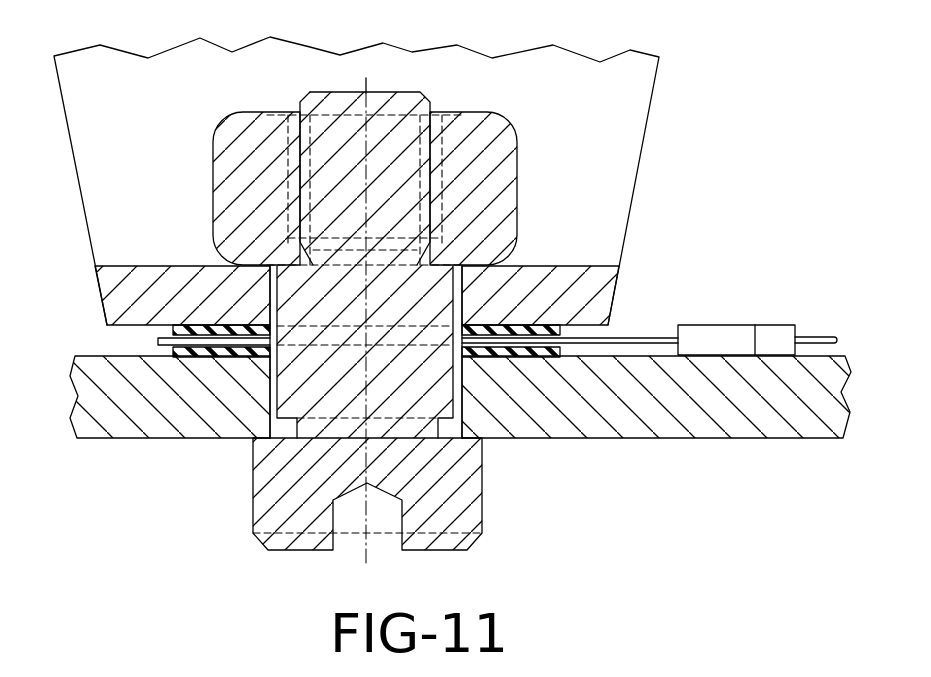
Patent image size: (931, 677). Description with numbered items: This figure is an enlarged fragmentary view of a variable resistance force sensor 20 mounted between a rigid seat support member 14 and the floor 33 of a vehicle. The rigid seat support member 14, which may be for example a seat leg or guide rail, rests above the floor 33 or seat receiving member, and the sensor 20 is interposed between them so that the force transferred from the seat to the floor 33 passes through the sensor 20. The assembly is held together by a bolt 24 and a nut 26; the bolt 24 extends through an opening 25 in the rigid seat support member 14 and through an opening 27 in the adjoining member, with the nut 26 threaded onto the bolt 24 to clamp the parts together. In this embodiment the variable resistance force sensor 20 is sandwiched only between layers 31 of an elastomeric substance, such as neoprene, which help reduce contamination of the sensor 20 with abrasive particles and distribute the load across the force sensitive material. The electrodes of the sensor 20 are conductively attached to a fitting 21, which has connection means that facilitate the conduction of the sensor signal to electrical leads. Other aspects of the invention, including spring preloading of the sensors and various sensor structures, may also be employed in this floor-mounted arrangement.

The rigid seat support member 14 is at (598, 272).
The variable resistance force sensor 20 is at (652, 338).
The fitting 21 is at (773, 338).
The bolt 24 is at (463, 490).
The opening in the rigid seat support member 25 is at (272, 383).
The nut 26 is at (493, 164).
The opening in the rigid seat pan member 27 is at (270, 302).
The layer of elastomeric substance 31 is at (170, 350).
The floor 33 is at (707, 427).